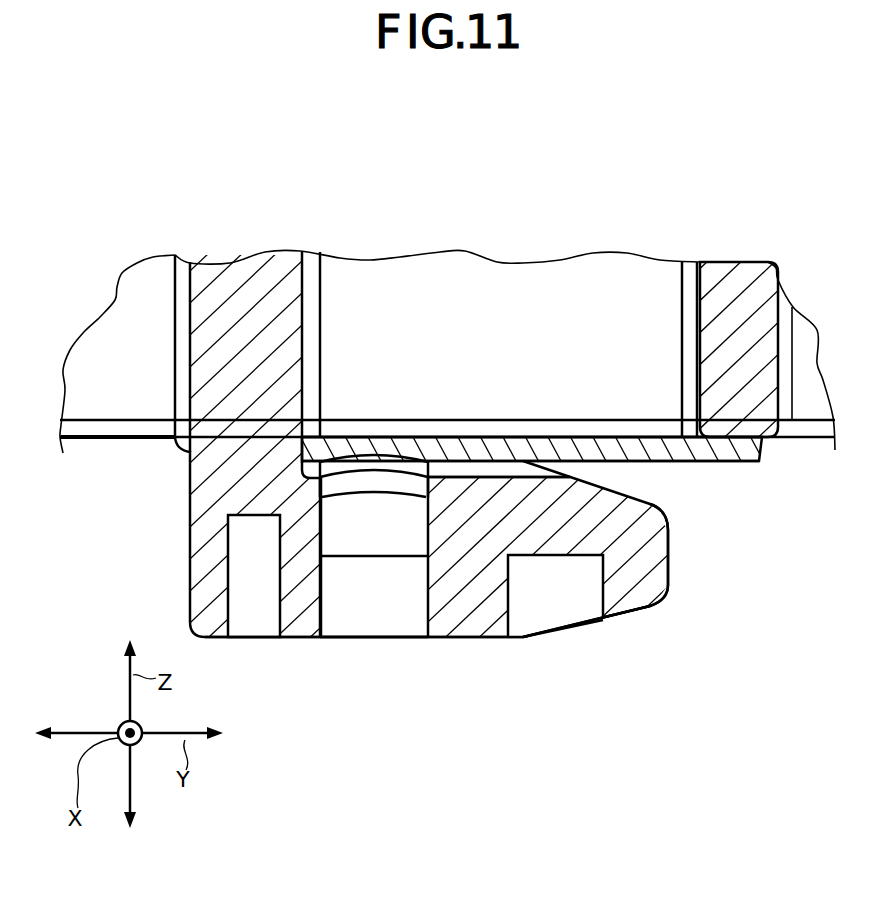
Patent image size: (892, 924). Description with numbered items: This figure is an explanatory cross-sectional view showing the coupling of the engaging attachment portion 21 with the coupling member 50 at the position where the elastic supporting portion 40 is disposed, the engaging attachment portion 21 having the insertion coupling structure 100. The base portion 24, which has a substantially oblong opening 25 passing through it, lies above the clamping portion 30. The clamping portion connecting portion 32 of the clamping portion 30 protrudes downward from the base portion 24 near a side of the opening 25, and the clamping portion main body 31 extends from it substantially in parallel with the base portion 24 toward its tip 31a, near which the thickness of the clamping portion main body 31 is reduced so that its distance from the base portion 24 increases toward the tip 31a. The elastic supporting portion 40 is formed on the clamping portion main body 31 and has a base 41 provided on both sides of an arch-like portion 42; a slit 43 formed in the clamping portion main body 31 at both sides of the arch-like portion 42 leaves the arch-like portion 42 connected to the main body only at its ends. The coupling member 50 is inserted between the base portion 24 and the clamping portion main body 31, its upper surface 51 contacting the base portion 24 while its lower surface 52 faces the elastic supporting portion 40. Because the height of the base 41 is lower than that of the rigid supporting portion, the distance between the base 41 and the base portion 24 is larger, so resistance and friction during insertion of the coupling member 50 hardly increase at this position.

The engaging attachment portion 21 is at (637, 660).
The insertion coupling structure 100 is at (637, 660).
The base portion 24 is at (733, 277).
The opening 25 is at (525, 277).
The clamping portion 30 is at (353, 660).
The clamping portion main body 31 is at (472, 617).
The tip 31a is at (668, 556).
The clamping portion connecting portion 32 is at (189, 470).
The elastic supporting portion 40 is at (445, 308).
The base 41 is at (460, 468).
The arch-like portion 42 is at (370, 458).
The slit 43 is at (422, 528).
The coupling member 50 is at (760, 462).
The upper surface 51 is at (596, 437).
The lower surface 52 is at (638, 463).